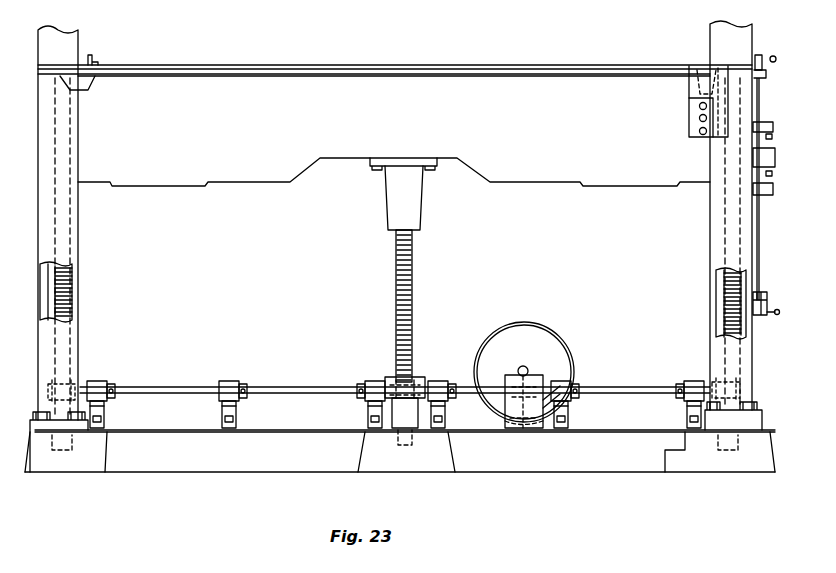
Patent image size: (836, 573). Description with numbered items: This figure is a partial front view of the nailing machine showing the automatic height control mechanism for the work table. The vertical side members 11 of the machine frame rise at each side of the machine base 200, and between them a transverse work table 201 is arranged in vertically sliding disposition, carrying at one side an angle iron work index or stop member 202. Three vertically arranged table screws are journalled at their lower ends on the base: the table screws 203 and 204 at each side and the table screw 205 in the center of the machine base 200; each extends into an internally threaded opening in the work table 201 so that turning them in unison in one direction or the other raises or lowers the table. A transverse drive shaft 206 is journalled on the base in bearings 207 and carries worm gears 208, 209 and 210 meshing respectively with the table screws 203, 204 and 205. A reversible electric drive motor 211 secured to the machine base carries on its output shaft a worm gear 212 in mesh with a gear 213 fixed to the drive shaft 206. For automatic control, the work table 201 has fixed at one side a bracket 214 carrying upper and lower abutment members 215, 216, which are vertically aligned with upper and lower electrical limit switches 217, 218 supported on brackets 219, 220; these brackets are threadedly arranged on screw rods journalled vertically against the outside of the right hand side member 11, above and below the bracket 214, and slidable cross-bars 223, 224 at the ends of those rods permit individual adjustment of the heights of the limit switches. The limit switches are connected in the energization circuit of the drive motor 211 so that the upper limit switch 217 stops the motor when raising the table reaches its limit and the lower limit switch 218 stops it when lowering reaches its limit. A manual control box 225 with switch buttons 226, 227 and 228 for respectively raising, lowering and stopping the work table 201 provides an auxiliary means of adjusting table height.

The vertical side member 11 is at (34, 236).
The machine base 200 is at (262, 474).
The work table 201 is at (430, 68).
The work index or stop member 202 is at (98, 63).
The table screw 203 is at (72, 306).
The table screw 204 is at (716, 318).
The table screw 205 is at (412, 326).
The drive shaft 206 is at (290, 386).
The bearing 207 is at (226, 414).
The worm gear 208 is at (70, 380).
The worm gear 209 is at (726, 378).
The worm gear 210 is at (392, 379).
The reversible electric drive motor 211 is at (524, 328).
The worm gear 212 is at (524, 367).
The gear 213 is at (524, 430).
The bracket 214 is at (775, 158).
The upper abutment member 215 is at (772, 144).
The lower abutment member 216 is at (772, 174).
The upper electrical limit switch 217 is at (773, 124).
The lower electrical limit switch 218 is at (773, 190).
The bracket 219 is at (766, 78).
The bracket 220 is at (767, 292).
The cross-bar 223 is at (776, 59).
The cross-bar 224 is at (774, 316).
The manual control box 225 is at (699, 118).
The switch button 226 is at (699, 105).
The switch button 227 is at (699, 131).
The switch button 228 is at (702, 137).